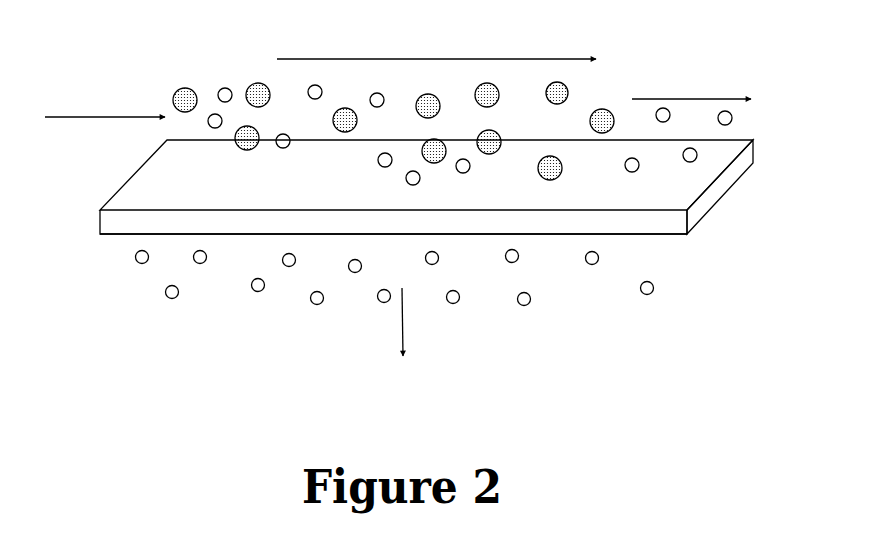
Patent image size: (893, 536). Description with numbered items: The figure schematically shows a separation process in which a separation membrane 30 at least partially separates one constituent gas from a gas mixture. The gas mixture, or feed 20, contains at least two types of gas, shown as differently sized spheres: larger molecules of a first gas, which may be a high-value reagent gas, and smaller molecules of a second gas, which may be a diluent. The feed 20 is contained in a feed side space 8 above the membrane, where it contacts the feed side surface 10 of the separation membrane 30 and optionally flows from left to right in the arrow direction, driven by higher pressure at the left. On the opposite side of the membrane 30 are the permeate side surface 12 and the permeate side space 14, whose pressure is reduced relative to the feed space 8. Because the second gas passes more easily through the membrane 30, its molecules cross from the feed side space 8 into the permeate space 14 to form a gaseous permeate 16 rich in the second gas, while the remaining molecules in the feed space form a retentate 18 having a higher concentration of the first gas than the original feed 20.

The feed side space 8 is at (402, 150).
The feed side surface 10 is at (165, 177).
The permeate side surface 12 is at (245, 250).
The permeate side space 14 is at (468, 236).
The gaseous permeate 16 is at (400, 398).
The retentate 18 is at (688, 61).
The gas mixture (feed) 20 is at (99, 85).
The separation membrane 30 is at (720, 190).